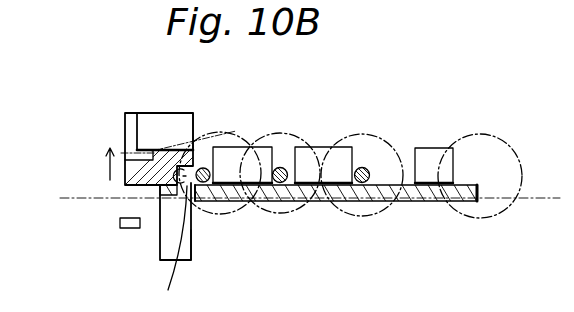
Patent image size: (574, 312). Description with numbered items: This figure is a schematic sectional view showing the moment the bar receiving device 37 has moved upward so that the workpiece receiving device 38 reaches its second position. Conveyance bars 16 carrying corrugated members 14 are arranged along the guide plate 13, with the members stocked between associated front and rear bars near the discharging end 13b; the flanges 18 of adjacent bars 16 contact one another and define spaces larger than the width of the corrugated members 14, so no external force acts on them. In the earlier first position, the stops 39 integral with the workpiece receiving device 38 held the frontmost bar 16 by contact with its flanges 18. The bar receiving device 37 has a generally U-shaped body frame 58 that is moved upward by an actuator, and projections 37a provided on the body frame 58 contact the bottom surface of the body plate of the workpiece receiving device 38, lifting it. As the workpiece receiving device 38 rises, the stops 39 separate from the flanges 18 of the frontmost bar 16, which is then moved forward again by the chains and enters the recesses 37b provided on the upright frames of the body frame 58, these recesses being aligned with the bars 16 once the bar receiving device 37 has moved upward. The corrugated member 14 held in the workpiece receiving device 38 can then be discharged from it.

The guide plate 13 is at (432, 194).
The discharging end 13b is at (197, 199).
The corrugated member 14 is at (183, 117).
The conveyance bar 16 is at (208, 167).
The flange 18 is at (240, 132).
The bar receiving device 37 is at (160, 240).
The projection 37a is at (160, 193).
The recess 37b is at (163, 249).
The workpiece receiving device 38 is at (127, 142).
The stop 39 is at (148, 148).
The body frame 58 is at (189, 251).